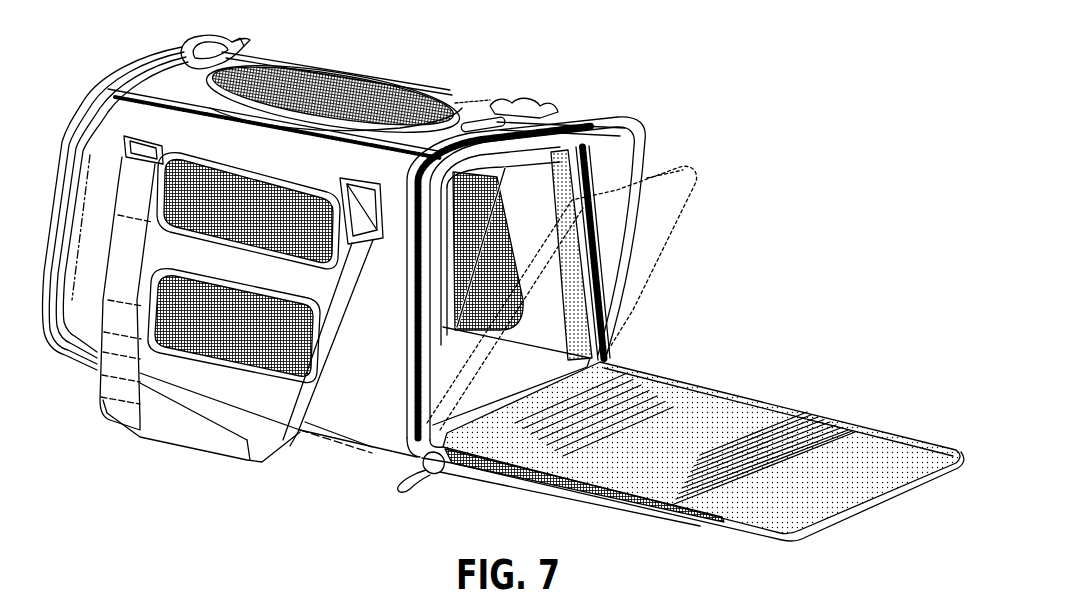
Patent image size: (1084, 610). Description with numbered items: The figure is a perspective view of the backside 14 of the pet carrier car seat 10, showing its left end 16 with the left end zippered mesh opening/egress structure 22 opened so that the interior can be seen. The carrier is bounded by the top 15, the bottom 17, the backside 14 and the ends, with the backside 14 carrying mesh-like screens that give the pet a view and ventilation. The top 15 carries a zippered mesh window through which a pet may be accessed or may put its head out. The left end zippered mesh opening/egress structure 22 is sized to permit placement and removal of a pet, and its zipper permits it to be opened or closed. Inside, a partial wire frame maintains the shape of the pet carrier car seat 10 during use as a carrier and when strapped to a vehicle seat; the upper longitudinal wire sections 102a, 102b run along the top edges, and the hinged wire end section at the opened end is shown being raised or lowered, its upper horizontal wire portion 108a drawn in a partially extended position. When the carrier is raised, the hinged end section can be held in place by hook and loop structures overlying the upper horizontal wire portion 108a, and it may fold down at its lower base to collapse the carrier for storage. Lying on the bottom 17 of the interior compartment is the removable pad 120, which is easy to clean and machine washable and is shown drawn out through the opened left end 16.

The pet carrier car seat 10 is at (711, 85).
The backside 14 is at (110, 147).
The top 15 is at (185, 93).
The left end 16 is at (699, 301).
The bottom 17 is at (520, 376).
The left end zippered mesh opening/egress structure 22 is at (445, 474).
The upper longitudinal wire section 102a is at (488, 88).
The upper longitudinal wire section 102b is at (318, 78).
The upper horizontal wire portion 108a is at (682, 168).
The removable pad 120 is at (718, 407).